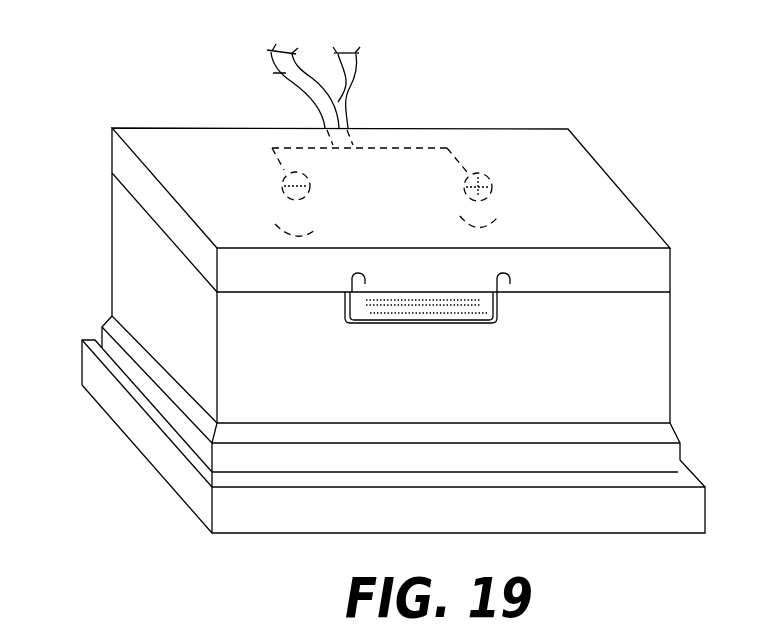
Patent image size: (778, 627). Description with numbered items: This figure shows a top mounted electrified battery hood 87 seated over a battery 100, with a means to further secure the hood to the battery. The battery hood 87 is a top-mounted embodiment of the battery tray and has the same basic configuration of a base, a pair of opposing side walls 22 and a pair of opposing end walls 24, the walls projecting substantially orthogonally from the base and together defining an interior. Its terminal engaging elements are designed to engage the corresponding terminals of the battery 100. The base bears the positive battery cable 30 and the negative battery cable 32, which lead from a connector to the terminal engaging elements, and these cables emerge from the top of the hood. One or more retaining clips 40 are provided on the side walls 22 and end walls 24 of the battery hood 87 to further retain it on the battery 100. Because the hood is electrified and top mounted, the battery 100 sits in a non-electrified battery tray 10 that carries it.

The battery tray 10 is at (132, 483).
The side walls 22 is at (695, 517).
The end walls 24 is at (682, 451).
The positive battery cable 30 is at (277, 70).
The negative battery cable 32 is at (352, 80).
The retaining clips 40 is at (488, 321).
The electrified battery hood 87 is at (630, 175).
The battery 100 is at (442, 379).